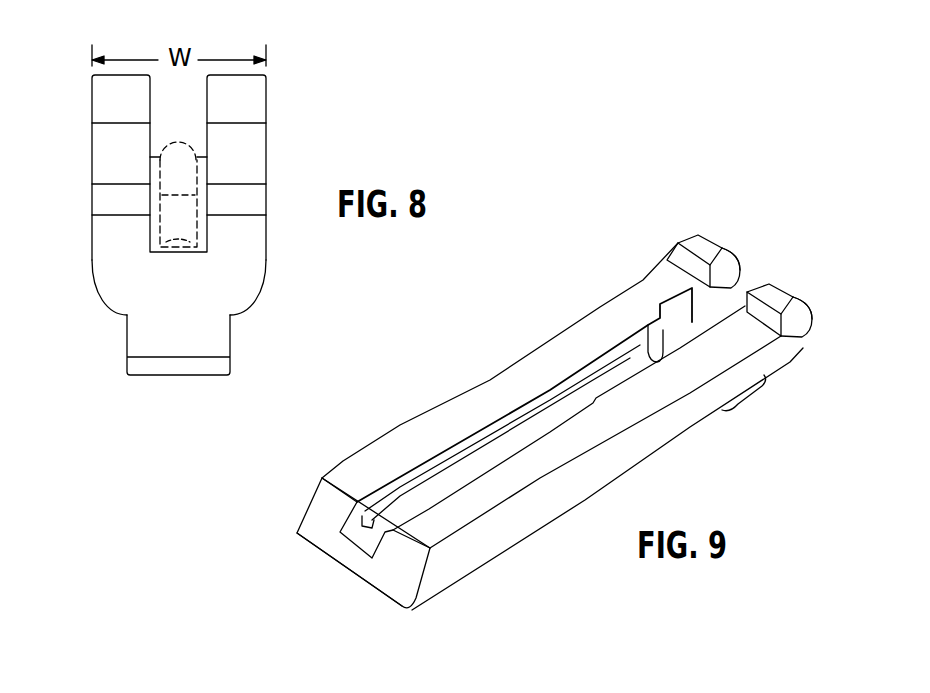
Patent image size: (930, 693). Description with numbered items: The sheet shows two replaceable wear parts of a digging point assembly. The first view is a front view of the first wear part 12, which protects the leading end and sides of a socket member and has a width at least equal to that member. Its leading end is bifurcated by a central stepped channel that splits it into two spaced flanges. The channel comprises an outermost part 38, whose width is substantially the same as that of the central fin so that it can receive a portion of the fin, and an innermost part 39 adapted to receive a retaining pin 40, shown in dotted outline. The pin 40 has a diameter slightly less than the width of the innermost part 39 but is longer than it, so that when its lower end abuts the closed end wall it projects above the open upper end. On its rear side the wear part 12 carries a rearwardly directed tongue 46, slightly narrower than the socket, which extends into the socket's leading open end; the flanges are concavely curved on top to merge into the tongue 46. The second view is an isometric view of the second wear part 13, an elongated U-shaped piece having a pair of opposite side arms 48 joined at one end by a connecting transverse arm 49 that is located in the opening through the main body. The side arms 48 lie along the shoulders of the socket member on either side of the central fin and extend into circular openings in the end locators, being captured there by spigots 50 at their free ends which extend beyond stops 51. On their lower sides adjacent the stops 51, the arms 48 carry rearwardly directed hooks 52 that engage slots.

In FIG. 8, the first wear part 12 is at (275, 85).
In FIG. 8, the outermost part of channel 38 is at (151, 145).
In FIG. 8, the innermost part of channel 39 is at (160, 206).
In FIG. 8, the retaining pin 40 is at (187, 165).
In FIG. 8, the tongue 46 is at (225, 340).
In FIG. 9, the second wear part 13 is at (503, 293).
In FIG. 9, the side arms 48 is at (457, 397).
In FIG. 9, the transverse arm 49 is at (343, 568).
In FIG. 9, the spigots 50 is at (762, 273).
In FIG. 9, the stops 51 is at (690, 234).
In FIG. 9, the hooks 52 is at (670, 323).